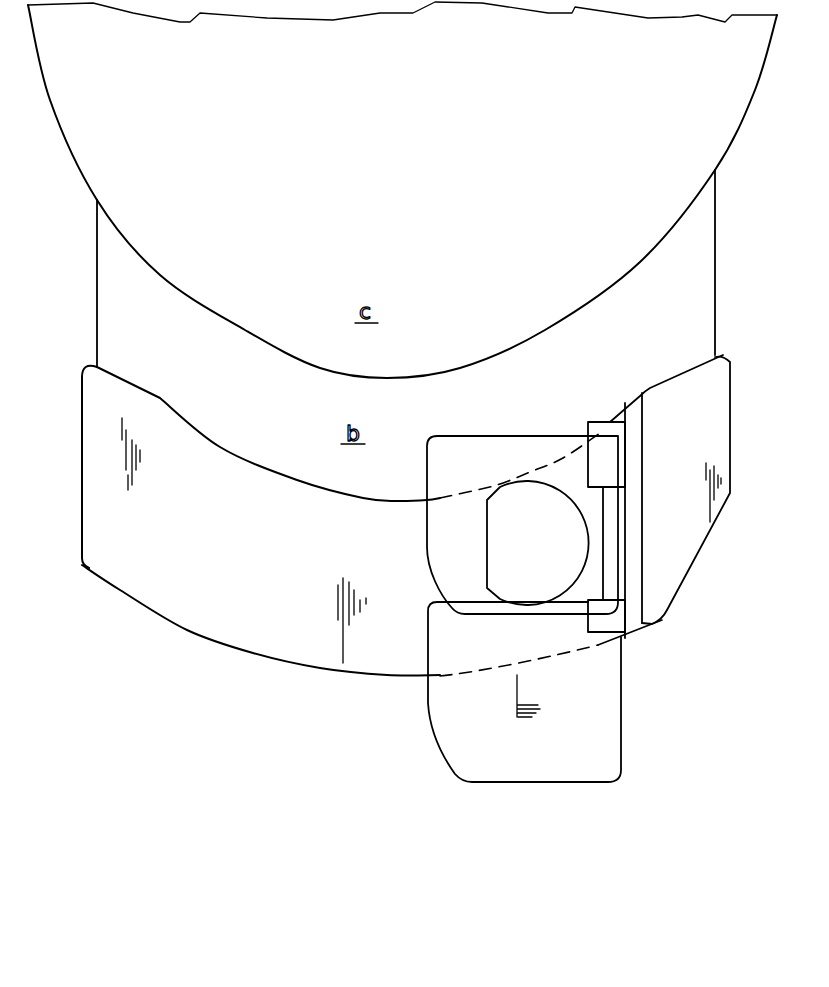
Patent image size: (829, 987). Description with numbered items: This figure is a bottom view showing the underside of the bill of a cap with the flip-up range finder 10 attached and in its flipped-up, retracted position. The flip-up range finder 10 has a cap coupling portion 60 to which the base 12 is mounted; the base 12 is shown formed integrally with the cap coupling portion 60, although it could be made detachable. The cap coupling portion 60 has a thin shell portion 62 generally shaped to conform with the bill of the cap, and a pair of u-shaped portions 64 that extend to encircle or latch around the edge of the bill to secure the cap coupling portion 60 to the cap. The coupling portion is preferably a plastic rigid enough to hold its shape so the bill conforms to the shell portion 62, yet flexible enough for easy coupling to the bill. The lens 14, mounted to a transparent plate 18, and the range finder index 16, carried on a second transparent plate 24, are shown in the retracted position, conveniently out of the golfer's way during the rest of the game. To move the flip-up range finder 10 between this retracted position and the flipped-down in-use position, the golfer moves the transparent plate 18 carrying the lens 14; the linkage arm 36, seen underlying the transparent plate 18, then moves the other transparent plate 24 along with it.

The flip-up range finder 10 is at (286, 676).
The base 12 is at (638, 427).
The lens 14 is at (513, 540).
The range finder index 16 is at (517, 713).
The transparent plate 18 is at (443, 578).
The second transparent plate 24 is at (610, 752).
The linkage arm 36 is at (610, 521).
The cap coupling portion 60 is at (205, 575).
The thin shell portion 62 is at (217, 618).
The "u" shaped portions 64 is at (102, 558).